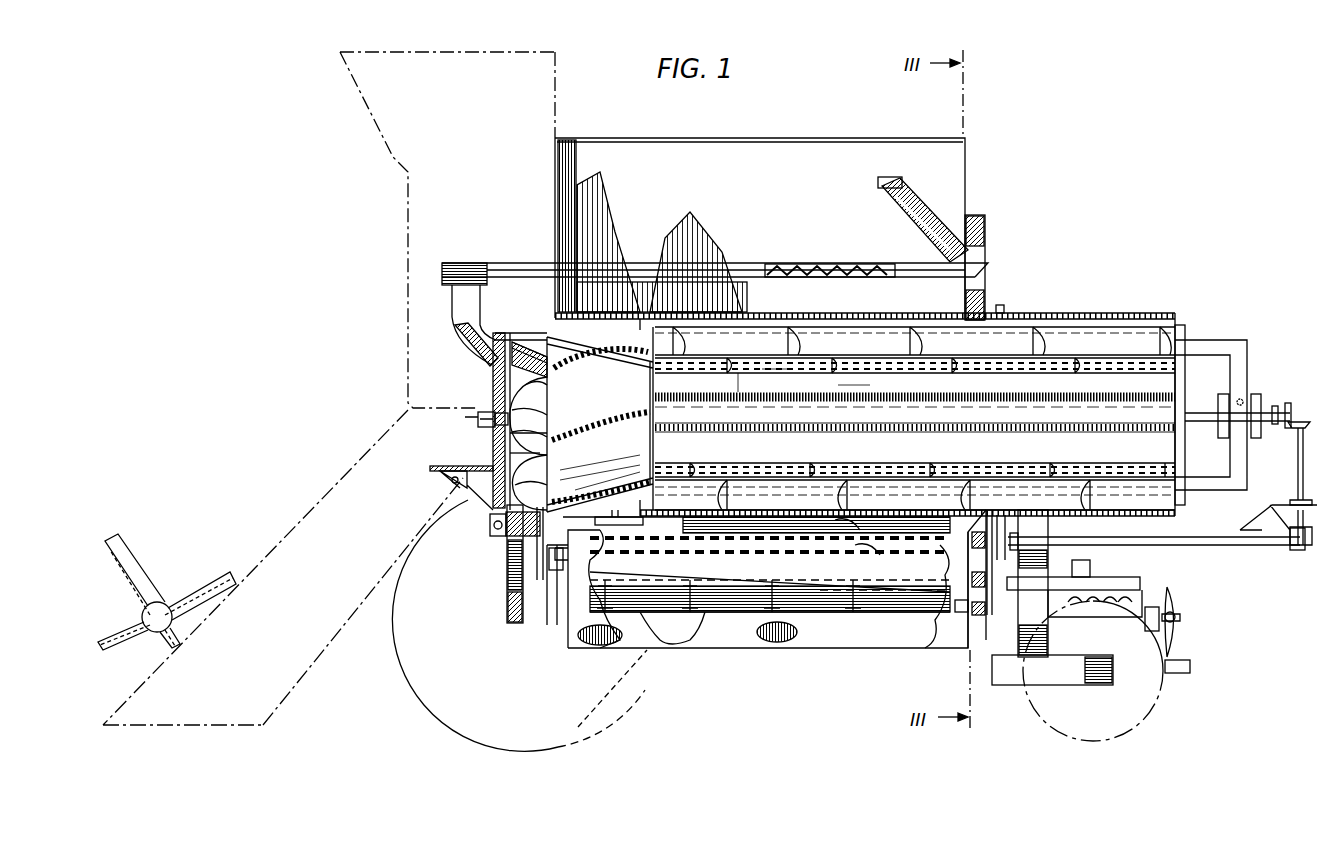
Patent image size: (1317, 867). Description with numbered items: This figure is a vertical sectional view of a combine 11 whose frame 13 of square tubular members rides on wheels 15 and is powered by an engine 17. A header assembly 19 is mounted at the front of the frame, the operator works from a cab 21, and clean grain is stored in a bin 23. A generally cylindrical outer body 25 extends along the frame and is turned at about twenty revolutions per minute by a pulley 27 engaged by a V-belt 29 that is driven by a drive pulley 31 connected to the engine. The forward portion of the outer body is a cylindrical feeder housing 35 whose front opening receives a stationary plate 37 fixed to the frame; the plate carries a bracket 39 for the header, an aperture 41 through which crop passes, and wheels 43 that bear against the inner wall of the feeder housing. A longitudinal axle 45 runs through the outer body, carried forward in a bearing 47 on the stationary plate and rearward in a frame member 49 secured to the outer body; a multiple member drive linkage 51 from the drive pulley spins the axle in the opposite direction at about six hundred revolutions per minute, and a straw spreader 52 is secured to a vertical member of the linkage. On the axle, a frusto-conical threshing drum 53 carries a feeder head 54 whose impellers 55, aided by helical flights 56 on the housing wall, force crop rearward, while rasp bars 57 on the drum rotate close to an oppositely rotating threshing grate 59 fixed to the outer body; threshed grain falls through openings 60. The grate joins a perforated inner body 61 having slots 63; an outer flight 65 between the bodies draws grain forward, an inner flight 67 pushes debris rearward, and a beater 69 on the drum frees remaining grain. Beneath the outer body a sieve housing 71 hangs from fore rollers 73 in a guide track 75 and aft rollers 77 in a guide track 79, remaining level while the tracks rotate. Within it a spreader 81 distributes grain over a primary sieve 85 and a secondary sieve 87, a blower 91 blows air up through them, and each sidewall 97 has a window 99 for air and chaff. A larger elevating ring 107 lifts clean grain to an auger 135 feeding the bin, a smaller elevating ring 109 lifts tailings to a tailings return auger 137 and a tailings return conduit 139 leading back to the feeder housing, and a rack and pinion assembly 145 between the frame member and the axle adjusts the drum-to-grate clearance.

The combine 11 is at (1040, 198).
The frame 13 is at (515, 605).
The wheels 15 is at (408, 666).
The engine 17 is at (1140, 578).
The header assembly 19 is at (313, 512).
The cab 21 is at (350, 76).
The bin 23 is at (967, 165).
The outer body 25 is at (1125, 314).
The pulley 27 is at (1000, 312).
The V-belt 29 is at (1003, 520).
The drive pulley 31 is at (1003, 532).
The feeder housing 35 is at (465, 322).
The stationary plate 37 is at (503, 368).
The bracket 39 is at (430, 463).
The aperture 41 is at (493, 433).
The wheels 43 is at (478, 343).
The axle 45 is at (493, 452).
The bearing 47 is at (478, 418).
The frame member 49 is at (1227, 340).
The drive linkage 51 is at (1298, 450).
The straw spreader 52 is at (1268, 517).
The threshing drum 53 is at (545, 368).
The feeder head 54 is at (512, 355).
The impellers 55 is at (478, 330).
The helical flights 56 is at (495, 328).
The rasp bars 57 is at (600, 365).
The threshing grate 59 is at (622, 352).
The openings 60 is at (672, 355).
The inner body 61 is at (738, 372).
The slots 63 is at (762, 368).
The outer flight 65 is at (800, 354).
The inner flight 67 is at (838, 385).
The beater 69 is at (923, 388).
The sieve housing 71 is at (647, 613).
The fore rollers 73 is at (545, 557).
The guide track 75 is at (557, 552).
The aft rollers 77 is at (977, 550).
The guide track 79 is at (982, 605).
The spreader 81 is at (700, 538).
The primary sieve 85 is at (743, 555).
The secondary sieve 87 is at (770, 637).
The blower 91 is at (628, 538).
The sidewall 97 is at (843, 530).
The window 99 is at (868, 540).
The elevating ring 107 is at (980, 570).
The elevating ring 109 is at (1003, 532).
The auger 135 is at (940, 217).
The tailings return auger 137 is at (900, 273).
The tailings return conduit 139 is at (493, 335).
The rack and pinion assembly 145 is at (1230, 397).